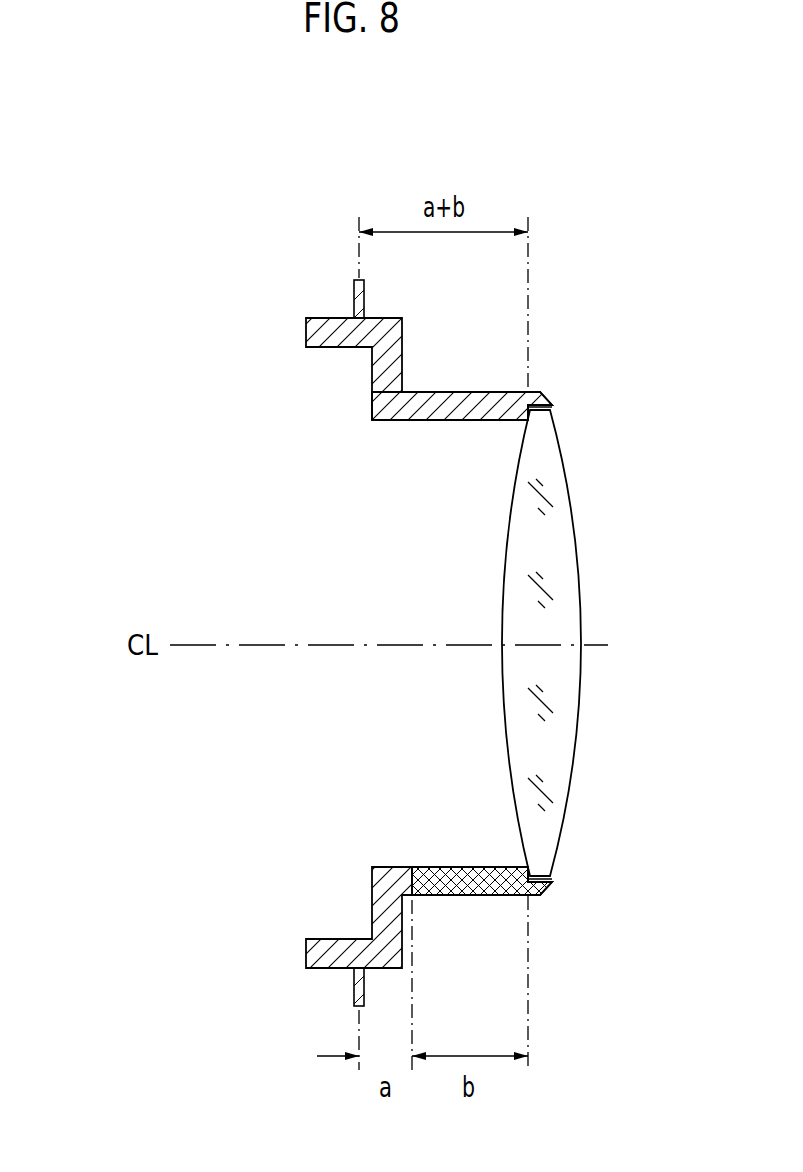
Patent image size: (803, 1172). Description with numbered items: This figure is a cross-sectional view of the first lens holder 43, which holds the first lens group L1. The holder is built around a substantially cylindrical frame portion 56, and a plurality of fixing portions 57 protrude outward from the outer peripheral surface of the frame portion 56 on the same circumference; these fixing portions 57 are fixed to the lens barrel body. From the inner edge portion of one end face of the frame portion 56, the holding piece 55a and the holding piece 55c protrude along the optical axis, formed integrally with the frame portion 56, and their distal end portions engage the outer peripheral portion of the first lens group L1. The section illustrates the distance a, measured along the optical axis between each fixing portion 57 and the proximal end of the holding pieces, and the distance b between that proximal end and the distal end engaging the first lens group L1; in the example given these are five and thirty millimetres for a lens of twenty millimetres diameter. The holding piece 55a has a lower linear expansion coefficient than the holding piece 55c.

The first lens holder 43 is at (124, 282).
The frame portion 56 is at (372, 391).
The fixing portion 57 is at (356, 300).
The holding piece 55c is at (440, 420).
The holding piece 55a is at (453, 867).
The first lens group L1 is at (575, 527).